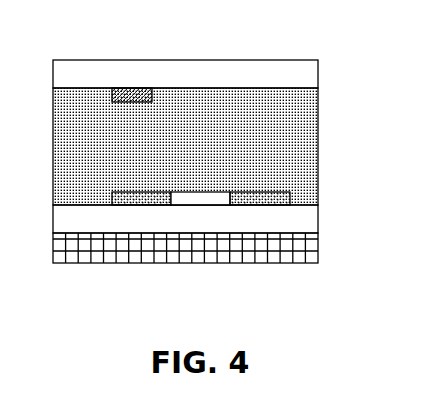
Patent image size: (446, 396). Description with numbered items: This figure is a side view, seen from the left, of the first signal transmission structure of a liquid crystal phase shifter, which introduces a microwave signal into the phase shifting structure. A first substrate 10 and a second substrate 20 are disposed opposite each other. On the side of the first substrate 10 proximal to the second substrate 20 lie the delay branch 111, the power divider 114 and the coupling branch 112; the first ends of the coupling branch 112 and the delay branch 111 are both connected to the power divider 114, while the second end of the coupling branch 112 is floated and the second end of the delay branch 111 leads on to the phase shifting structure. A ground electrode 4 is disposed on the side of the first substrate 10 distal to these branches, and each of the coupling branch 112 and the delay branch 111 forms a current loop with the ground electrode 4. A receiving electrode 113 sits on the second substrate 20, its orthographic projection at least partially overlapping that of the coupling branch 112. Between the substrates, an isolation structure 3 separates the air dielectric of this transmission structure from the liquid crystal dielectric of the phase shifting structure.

The isolation structure 3 is at (297, 153).
The ground electrode 4 is at (308, 247).
The first substrate 10 is at (87, 223).
The second substrate 20 is at (213, 82).
The delay branch 111 is at (267, 195).
The coupling branch 112 is at (127, 197).
The receiving electrode 113 is at (145, 92).
The power divider 114 is at (200, 195).